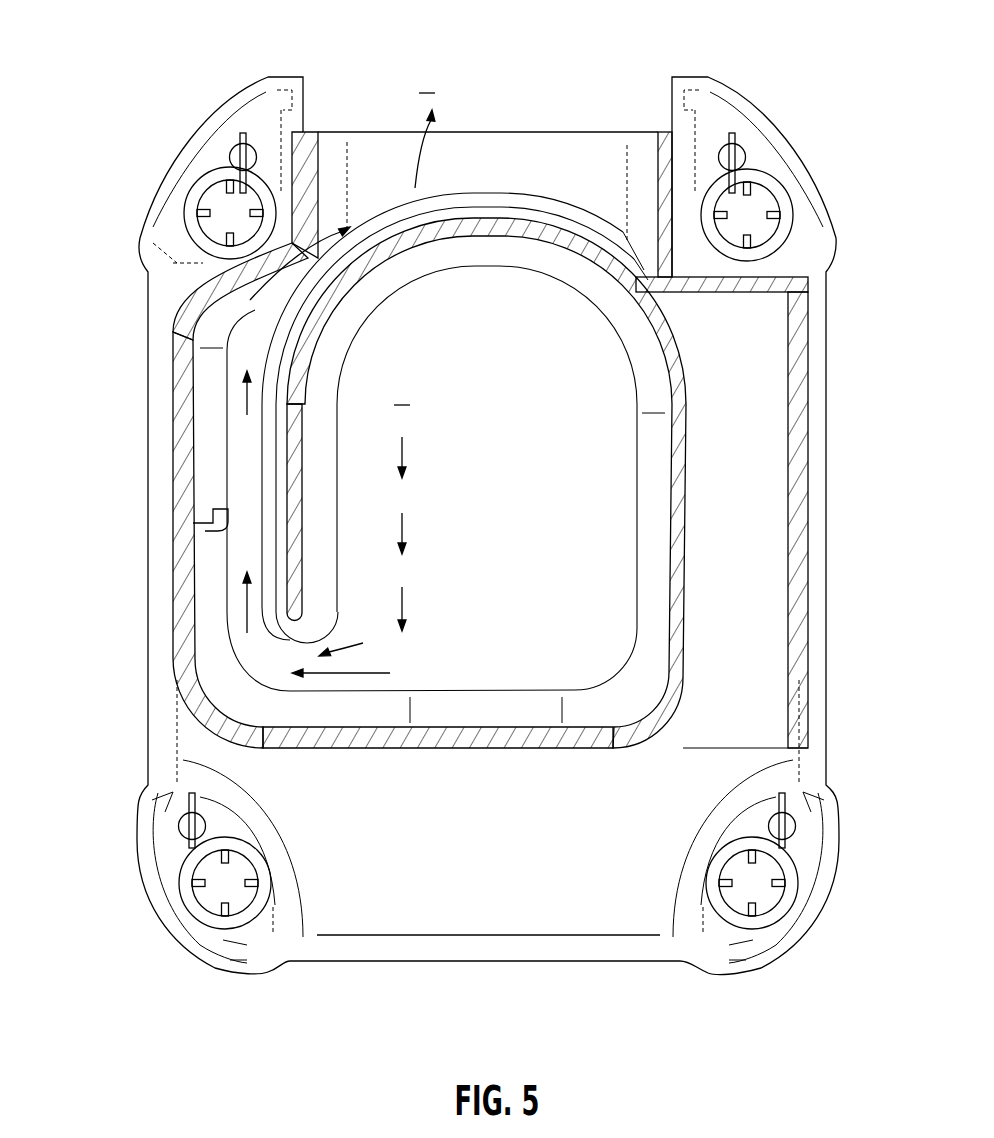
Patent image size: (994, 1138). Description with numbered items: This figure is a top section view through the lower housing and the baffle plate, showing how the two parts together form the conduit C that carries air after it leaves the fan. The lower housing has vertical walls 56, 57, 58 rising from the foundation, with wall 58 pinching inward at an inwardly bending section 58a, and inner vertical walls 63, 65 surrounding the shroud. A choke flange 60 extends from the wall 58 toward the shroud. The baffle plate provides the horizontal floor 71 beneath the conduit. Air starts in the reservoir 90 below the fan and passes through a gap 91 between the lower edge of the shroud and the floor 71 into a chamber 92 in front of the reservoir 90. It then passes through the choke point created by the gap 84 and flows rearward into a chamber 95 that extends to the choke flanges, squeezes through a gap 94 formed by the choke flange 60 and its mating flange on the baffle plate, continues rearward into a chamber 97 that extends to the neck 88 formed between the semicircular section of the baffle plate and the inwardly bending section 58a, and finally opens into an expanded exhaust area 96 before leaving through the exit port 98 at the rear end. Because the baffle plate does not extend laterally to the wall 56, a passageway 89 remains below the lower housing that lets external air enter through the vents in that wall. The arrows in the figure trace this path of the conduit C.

The exit port 98 is at (537, 112).
The expanded exhaust area 96 is at (474, 180).
The inwardly bending section 58a is at (280, 263).
The neck 88 is at (335, 272).
The chamber 97 is at (207, 412).
The vertical wall 58 is at (177, 485).
The choke flange 60 is at (197, 530).
The inner vertical wall 63 is at (287, 575).
The chamber 95 is at (263, 668).
The gap 94 is at (247, 502).
The gap 84 is at (347, 633).
The reservoir 90 is at (483, 478).
The gap 91 is at (449, 633).
The chamber 92 is at (449, 673).
The vertical wall 56 is at (812, 393).
The passageway 89 is at (767, 457).
The inner vertical wall 65 is at (690, 510).
The horizontal floor 71 is at (600, 578).
The vertical wall 57 is at (445, 748).